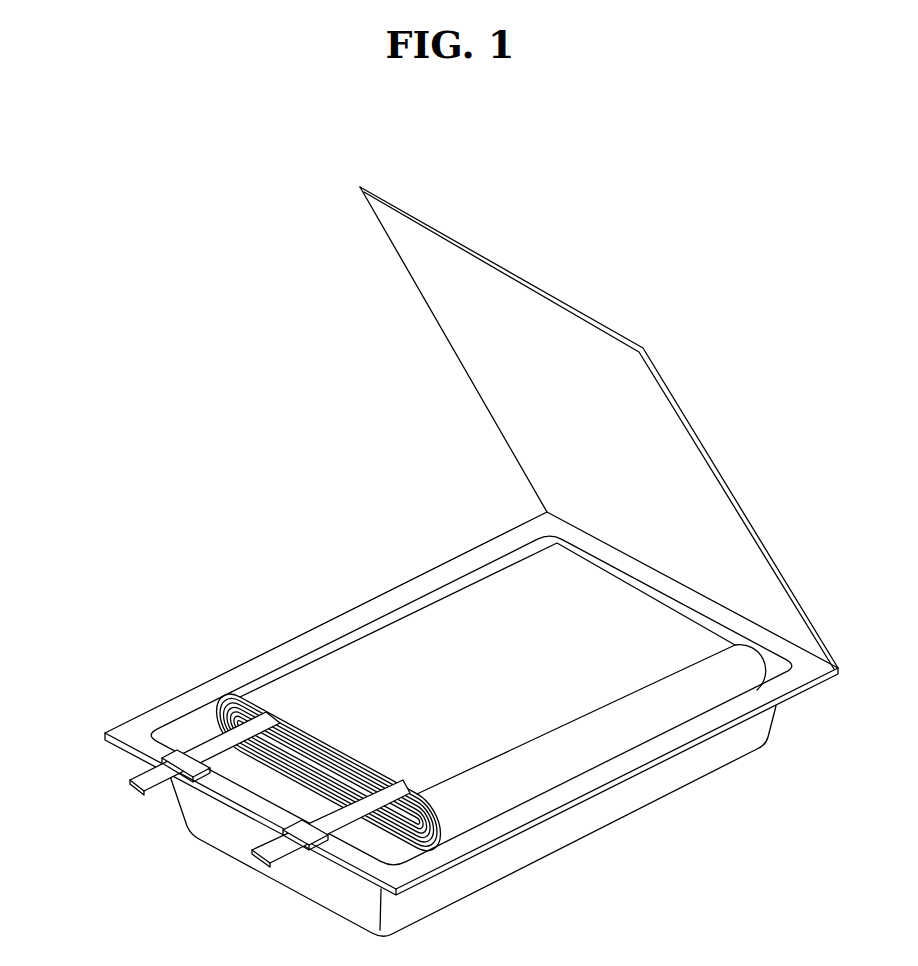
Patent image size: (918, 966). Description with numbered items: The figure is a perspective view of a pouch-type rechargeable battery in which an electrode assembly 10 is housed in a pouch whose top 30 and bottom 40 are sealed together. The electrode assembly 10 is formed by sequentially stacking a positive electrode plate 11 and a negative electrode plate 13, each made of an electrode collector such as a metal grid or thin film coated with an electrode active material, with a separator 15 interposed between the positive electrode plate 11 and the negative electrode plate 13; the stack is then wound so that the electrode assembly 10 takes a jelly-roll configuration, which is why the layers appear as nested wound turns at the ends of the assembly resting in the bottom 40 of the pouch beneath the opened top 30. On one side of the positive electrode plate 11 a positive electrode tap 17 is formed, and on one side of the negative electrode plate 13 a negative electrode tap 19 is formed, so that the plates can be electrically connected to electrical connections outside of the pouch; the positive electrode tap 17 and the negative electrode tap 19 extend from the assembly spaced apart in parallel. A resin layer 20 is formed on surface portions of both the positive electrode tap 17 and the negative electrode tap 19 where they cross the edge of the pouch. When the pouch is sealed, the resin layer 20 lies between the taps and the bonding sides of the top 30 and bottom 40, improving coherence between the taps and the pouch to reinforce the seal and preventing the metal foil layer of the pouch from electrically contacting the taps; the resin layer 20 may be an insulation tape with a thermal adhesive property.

The electrode assembly 10 is at (429, 702).
The positive electrode plate 11 is at (217, 699).
The negative electrode plate 13 is at (209, 722).
The separator 15 is at (212, 706).
The positive electrode tap 17 is at (273, 853).
The negative electrode tap 19 is at (150, 783).
The resin layer 20 is at (165, 759).
The top of the pouch 30 is at (430, 296).
The bottom of the pouch 40 is at (660, 793).